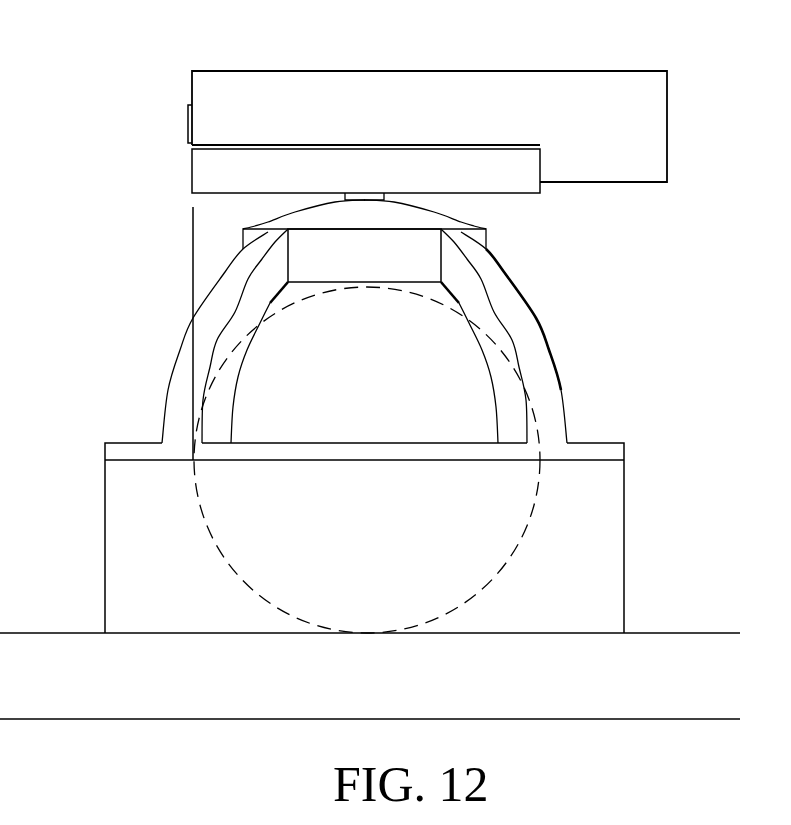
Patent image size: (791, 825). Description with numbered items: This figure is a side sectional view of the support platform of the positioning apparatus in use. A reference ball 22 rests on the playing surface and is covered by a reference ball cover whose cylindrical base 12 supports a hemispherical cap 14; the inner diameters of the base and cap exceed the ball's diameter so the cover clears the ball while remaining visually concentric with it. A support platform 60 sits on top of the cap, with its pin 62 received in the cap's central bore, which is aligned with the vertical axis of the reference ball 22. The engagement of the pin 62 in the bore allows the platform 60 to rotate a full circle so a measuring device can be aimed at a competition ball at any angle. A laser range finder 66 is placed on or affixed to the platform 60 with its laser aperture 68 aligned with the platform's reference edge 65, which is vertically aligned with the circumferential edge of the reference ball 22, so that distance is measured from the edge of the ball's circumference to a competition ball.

The cylindrical base 12 is at (595, 485).
The hemispherical cap 14 is at (178, 395).
The reference ball 22 is at (427, 370).
The support platform 60 is at (505, 165).
The pin 62 is at (367, 197).
The reference edge 65 is at (190, 193).
The laser range finder 66 is at (598, 107).
The laser aperture 68 is at (190, 120).